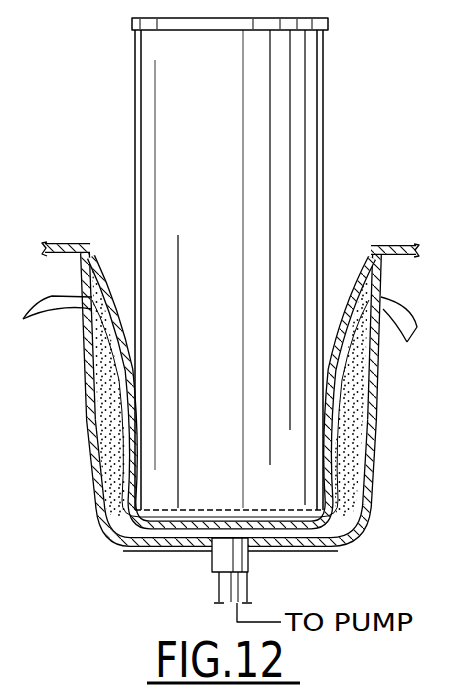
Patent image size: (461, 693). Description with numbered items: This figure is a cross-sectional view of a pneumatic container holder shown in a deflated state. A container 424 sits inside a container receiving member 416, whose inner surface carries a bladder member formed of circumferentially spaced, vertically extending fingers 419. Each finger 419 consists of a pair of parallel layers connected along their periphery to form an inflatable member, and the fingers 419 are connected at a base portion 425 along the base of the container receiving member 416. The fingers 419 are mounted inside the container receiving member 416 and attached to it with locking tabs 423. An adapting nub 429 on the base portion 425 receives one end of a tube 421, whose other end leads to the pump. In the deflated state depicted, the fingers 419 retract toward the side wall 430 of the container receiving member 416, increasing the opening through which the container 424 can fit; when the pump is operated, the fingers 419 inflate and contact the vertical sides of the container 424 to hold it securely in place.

The container 424 is at (306, 84).
The locking tabs 423 is at (57, 297).
The fingers 419 is at (94, 354).
The side wall 430 is at (94, 440).
The container receiving member 416 is at (370, 505).
The base portion 425 is at (304, 530).
The adapting nub 429 is at (216, 559).
The tube 421 is at (235, 593).